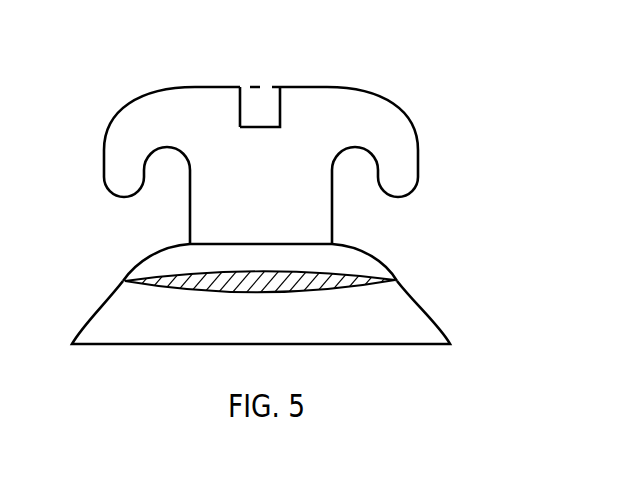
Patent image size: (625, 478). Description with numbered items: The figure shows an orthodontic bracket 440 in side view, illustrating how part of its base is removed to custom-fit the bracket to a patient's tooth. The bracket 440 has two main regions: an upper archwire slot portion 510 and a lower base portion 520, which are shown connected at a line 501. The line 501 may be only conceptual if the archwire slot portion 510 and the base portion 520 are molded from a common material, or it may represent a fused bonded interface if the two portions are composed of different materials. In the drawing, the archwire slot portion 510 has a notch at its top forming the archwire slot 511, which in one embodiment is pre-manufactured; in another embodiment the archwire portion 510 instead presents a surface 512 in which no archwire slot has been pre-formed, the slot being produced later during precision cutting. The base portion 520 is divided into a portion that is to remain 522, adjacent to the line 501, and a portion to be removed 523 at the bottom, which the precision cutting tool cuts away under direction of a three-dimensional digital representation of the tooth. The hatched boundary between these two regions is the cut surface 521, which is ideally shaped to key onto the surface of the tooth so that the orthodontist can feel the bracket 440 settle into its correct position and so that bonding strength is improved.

The bracket 440 is at (277, 177).
The archwire slot portion 510 is at (313, 127).
The archwire slot 511 is at (265, 100).
The surface 512 is at (241, 86).
The line 501 is at (212, 243).
The base portion 520 is at (273, 266).
The cut surface 521 is at (123, 281).
The portion that is to remain 522 is at (275, 268).
The portion to be removed 523 is at (275, 324).